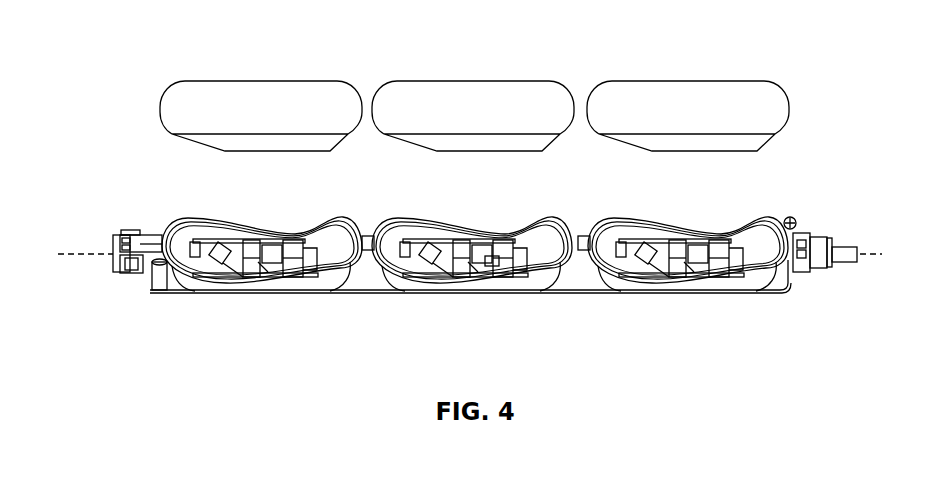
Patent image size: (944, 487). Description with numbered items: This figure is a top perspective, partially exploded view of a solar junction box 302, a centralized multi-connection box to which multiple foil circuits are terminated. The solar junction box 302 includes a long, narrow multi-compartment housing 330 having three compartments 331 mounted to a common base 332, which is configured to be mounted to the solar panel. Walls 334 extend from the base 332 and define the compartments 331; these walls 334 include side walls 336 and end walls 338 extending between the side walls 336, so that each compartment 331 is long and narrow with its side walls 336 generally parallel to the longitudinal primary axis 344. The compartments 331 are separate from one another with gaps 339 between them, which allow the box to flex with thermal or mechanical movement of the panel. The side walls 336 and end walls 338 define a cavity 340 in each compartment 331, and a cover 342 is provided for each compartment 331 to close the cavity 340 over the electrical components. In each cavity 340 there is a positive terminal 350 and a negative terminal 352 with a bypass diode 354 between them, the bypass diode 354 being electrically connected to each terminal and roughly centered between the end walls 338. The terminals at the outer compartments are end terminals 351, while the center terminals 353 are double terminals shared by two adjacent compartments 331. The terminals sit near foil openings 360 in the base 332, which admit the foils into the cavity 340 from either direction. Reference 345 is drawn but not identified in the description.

The solar junction box 302 is at (584, 49).
The multi-compartment housing 330 is at (587, 307).
The compartment 331 is at (335, 296).
The base 332 is at (577, 282).
The wall 334 is at (667, 243).
The side wall 336 is at (257, 240).
The end wall 338 is at (162, 236).
The gap 339 is at (582, 222).
The cavity 340 is at (318, 236).
The cover 342 is at (698, 88).
The primary axis 344 is at (78, 257).
The longitudinal axis 345 is at (468, 327).
The positive terminal 350 is at (195, 243).
The end terminal 351 is at (245, 284).
The negative terminal 352 is at (290, 242).
The center terminal 353 is at (303, 283).
The bypass diode 354 is at (272, 282).
The foil opening 360 is at (492, 262).